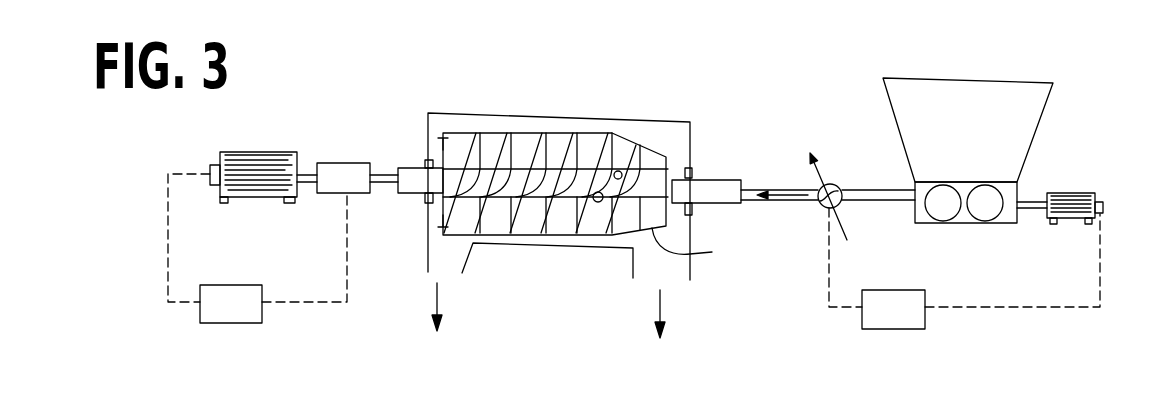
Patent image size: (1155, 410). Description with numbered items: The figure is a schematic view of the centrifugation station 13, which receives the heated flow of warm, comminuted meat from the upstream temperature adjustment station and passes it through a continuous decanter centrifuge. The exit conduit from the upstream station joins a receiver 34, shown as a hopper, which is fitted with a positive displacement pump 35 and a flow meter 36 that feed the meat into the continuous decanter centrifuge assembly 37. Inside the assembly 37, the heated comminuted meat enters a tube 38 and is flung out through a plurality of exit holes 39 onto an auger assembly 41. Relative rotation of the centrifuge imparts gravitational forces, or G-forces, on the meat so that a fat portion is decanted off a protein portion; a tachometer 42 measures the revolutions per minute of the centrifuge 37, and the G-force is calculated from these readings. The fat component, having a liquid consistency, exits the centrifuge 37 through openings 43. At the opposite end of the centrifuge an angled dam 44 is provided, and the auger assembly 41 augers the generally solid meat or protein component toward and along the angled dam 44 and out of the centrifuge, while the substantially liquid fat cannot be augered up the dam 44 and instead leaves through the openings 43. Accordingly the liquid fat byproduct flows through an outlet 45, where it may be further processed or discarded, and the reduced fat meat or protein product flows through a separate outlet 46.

The centrifugation station 13 is at (716, 114).
The receiver 34 is at (980, 147).
The positive displacement pump 35 is at (945, 212).
The flow meter 36 is at (873, 150).
The continuous decanter centrifuge assembly 37 is at (617, 124).
The tube 38 is at (712, 186).
The exit holes 39 is at (621, 172).
The auger assembly 41 is at (533, 163).
The tachometer 42 is at (347, 176).
The openings 43 is at (438, 141).
The angled dam 44 is at (697, 248).
The outlet 45 is at (450, 262).
The outlet 46 is at (647, 268).